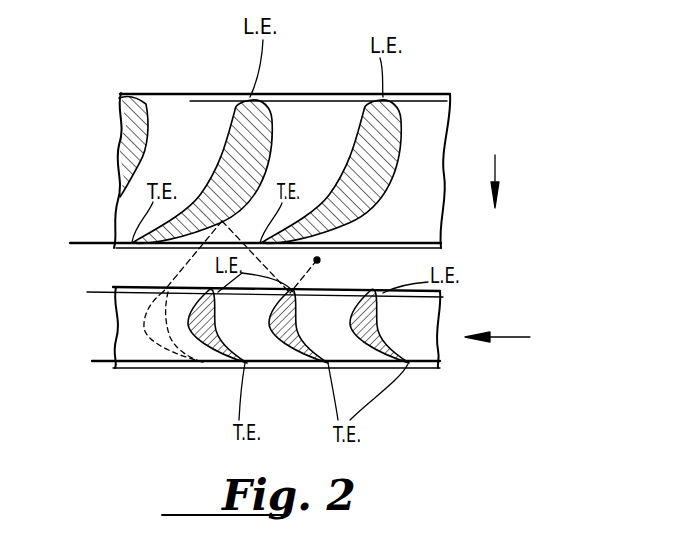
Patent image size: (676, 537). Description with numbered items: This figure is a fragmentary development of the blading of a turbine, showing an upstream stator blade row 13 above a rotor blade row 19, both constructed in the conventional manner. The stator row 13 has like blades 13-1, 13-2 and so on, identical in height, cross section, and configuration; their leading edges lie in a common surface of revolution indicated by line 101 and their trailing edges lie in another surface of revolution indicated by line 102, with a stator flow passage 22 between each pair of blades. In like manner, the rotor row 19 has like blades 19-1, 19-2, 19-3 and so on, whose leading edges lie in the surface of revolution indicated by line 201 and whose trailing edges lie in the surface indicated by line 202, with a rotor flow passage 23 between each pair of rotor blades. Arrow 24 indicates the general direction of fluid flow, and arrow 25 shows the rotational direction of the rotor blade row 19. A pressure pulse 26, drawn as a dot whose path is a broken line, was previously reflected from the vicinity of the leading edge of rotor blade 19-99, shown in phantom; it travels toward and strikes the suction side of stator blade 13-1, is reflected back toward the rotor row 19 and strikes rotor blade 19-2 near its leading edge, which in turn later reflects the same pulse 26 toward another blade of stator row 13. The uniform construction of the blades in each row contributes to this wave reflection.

The stator blade row 13 is at (120, 135).
The stator blade 13-1 is at (230, 140).
The stator blade 13-2 is at (352, 153).
The stator flow passage 22 is at (205, 170).
The leading-edge surface-of-revolution line 101 is at (478, 103).
The trailing-edge surface-of-revolution line 102 is at (241, 233).
The rotor blade row 19 is at (117, 323).
The rotor blade 19-1 is at (215, 322).
The rotor blade 19-2 is at (297, 322).
The rotor blade 19-3 is at (378, 323).
The rotor blade (phantom position) 19-99 is at (158, 347).
The rotor flow passage 23 is at (266, 356).
The leading-edge surface-of-revolution line 201 is at (458, 298).
The trailing-edge surface-of-revolution line 202 is at (462, 367).
The fluid flow direction arrow 24 is at (497, 168).
The rotor rotation direction arrow 25 is at (518, 333).
The pressure pulse 26 is at (320, 261).